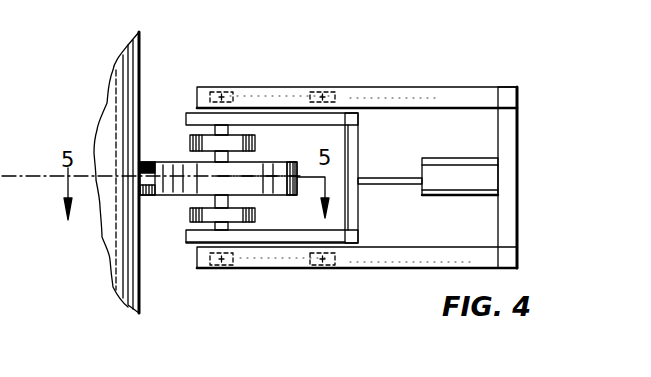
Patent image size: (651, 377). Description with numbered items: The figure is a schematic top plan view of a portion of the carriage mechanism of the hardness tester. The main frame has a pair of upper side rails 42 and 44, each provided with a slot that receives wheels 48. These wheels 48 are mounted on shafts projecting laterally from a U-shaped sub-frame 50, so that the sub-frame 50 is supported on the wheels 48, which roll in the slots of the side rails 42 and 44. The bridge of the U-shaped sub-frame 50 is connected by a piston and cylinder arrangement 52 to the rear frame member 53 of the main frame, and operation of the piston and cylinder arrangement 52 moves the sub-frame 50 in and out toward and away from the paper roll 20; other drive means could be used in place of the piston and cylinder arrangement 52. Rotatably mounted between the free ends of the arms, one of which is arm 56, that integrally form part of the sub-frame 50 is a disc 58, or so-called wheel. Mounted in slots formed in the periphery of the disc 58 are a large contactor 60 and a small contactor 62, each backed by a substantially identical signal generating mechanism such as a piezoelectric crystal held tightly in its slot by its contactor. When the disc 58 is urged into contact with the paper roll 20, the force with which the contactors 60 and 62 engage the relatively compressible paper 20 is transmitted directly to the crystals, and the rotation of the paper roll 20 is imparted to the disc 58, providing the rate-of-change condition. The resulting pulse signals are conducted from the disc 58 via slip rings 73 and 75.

The paper roll 20 is at (133, 73).
The upper side rail 42 is at (453, 95).
The upper side rail 44 is at (490, 252).
The wheels 48 is at (218, 90).
The U-shaped sub-frame 50 is at (357, 146).
The piston and cylinder arrangement 52 is at (487, 174).
The rear frame member 53 is at (507, 131).
The arm 56 is at (278, 238).
The disc 58 is at (190, 187).
The large contactor 60 is at (145, 163).
The small contactor 62 is at (297, 172).
The slip ring 73 is at (218, 215).
The slip ring 75 is at (236, 138).